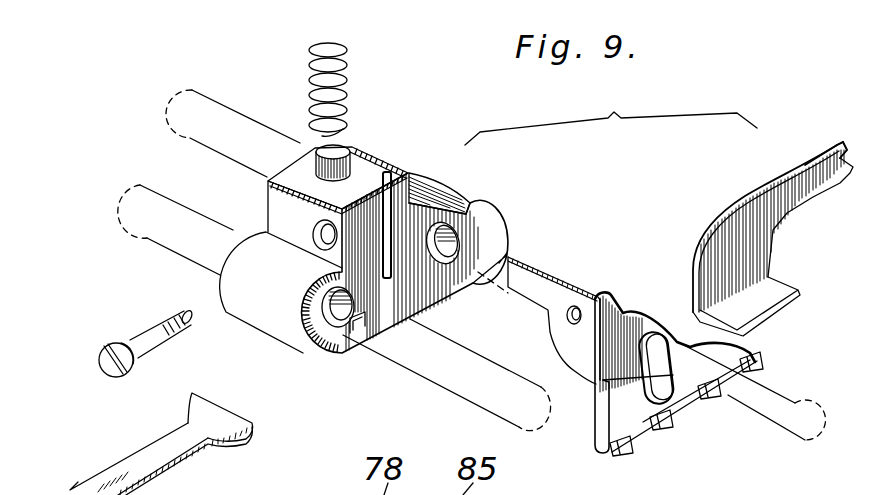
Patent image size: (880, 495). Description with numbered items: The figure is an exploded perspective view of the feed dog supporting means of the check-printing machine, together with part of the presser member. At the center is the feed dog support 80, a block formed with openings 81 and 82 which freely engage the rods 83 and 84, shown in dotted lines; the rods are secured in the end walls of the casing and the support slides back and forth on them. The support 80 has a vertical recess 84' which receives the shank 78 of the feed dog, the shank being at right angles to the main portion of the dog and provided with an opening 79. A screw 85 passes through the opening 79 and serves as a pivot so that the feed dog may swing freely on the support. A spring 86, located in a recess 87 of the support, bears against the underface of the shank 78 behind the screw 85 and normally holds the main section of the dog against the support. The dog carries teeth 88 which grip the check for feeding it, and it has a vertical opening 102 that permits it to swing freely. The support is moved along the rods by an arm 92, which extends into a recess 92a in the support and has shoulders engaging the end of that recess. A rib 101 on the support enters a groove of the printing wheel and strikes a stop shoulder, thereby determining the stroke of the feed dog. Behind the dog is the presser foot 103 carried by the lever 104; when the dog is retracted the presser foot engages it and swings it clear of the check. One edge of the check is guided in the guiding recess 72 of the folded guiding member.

The guiding recess 72 is at (618, 316).
The shank 78 is at (548, 290).
The opening 79 is at (576, 312).
The feed dog support 80 is at (362, 157).
The opening 81 is at (461, 236).
The opening 82 is at (334, 311).
The rod 83 is at (509, 249).
The rod 84 is at (447, 378).
The vertical recess 84' is at (423, 179).
The screw 85 is at (145, 334).
The spring 86 is at (322, 97).
The recess 87 is at (312, 176).
The teeth 88 is at (620, 452).
The arm 92 is at (128, 472).
The recess 92a is at (358, 335).
The rib 101 is at (450, 188).
The vertical opening 102 is at (647, 375).
The presser foot 103 is at (760, 297).
The lever 104 is at (780, 202).